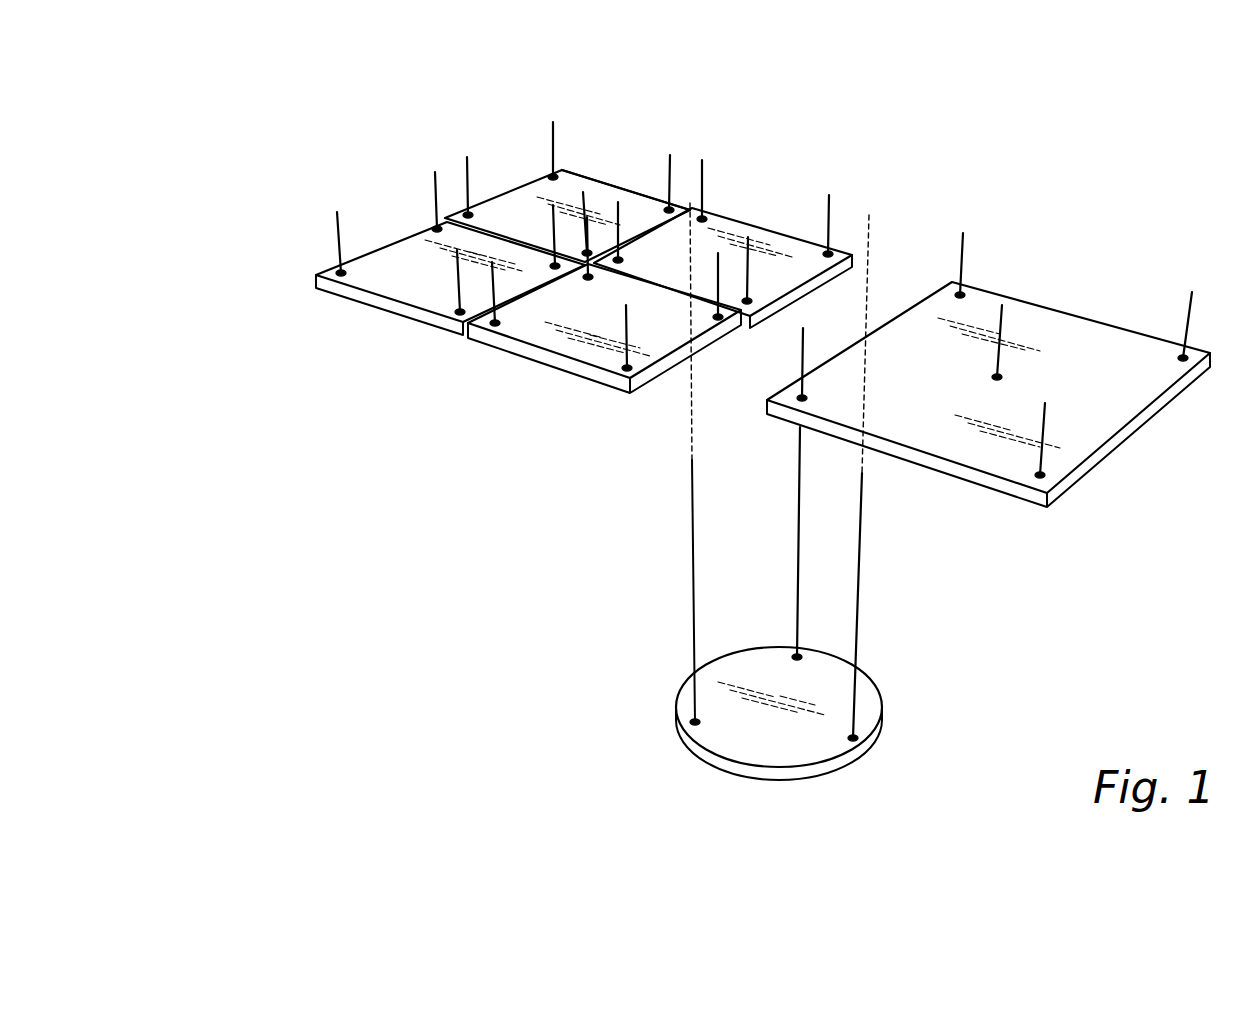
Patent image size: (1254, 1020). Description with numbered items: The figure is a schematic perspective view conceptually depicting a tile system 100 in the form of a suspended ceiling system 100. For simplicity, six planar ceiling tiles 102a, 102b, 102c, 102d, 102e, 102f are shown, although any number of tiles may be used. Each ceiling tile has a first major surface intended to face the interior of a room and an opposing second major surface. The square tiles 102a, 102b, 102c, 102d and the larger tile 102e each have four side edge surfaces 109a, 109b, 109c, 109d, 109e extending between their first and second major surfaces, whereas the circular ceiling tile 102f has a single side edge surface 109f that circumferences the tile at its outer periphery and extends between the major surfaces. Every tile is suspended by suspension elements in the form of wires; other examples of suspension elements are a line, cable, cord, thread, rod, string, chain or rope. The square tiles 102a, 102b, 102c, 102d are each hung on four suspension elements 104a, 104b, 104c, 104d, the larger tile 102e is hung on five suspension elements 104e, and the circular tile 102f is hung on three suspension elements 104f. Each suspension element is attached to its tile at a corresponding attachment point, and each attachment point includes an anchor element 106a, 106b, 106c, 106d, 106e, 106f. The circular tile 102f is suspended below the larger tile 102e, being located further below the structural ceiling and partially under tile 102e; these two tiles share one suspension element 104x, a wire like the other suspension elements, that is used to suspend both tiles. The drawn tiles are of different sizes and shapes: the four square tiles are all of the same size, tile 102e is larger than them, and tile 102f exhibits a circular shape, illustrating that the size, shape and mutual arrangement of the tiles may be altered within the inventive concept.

The tile system 100 is at (983, 138).
The ceiling tile 102a is at (750, 222).
The ceiling tile 102b is at (607, 183).
The ceiling tile 102c is at (400, 310).
The ceiling tile 102d is at (505, 347).
The ceiling tile 102e is at (1130, 428).
The ceiling tile 102f is at (867, 712).
The suspension element 104a is at (831, 213).
The suspension element 104b is at (671, 162).
The suspension element 104c is at (340, 228).
The suspension element 104d is at (624, 352).
The suspension element 104e is at (964, 266).
The suspension element 104f is at (860, 582).
The suspension element 104x is at (802, 507).
The anchor element 106a is at (838, 249).
The anchor element 106b is at (672, 208).
The anchor element 106c is at (336, 271).
The anchor element 106d is at (629, 373).
The anchor element 106e is at (964, 295).
The anchor element 106f is at (856, 741).
The side edge surface 109a is at (794, 233).
The side edge surface 109b is at (597, 180).
The side edge surface 109c is at (330, 285).
The side edge surface 109d is at (638, 392).
The side edge surface 109e is at (1082, 467).
The side edge surface 109f is at (772, 772).